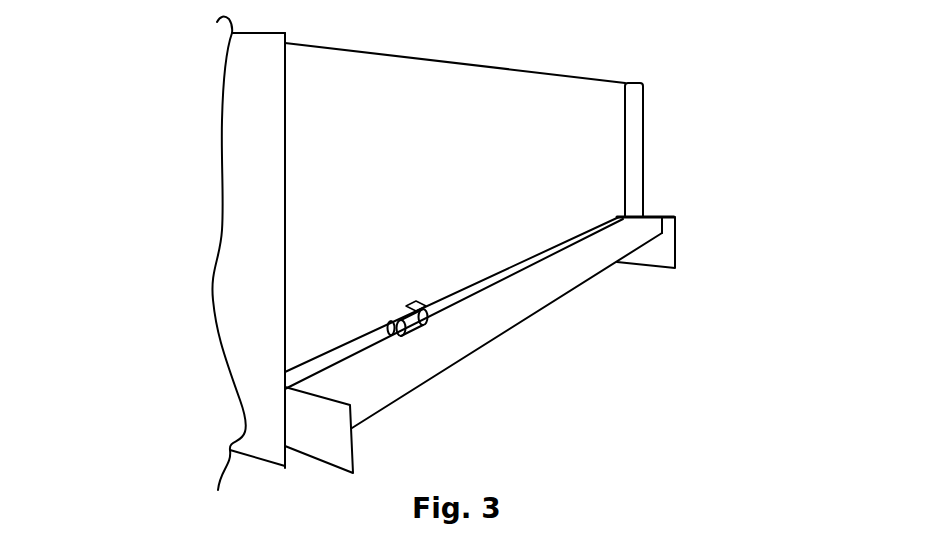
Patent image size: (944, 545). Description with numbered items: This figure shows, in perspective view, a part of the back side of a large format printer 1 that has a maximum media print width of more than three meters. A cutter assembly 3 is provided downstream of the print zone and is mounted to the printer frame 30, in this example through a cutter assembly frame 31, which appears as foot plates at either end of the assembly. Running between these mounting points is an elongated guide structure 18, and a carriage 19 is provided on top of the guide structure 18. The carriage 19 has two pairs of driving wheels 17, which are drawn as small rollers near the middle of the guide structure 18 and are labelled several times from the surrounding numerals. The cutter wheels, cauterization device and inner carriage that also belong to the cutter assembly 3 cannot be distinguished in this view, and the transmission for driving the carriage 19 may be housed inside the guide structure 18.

The large format printer 1 is at (587, 95).
The cutter assembly 3 is at (447, 327).
The driving wheels 17 is at (388, 330).
The guide structure 18 is at (617, 248).
The carriage 19 is at (392, 326).
The printer frame 30 is at (258, 256).
The cutter assembly frame 31 is at (312, 424).